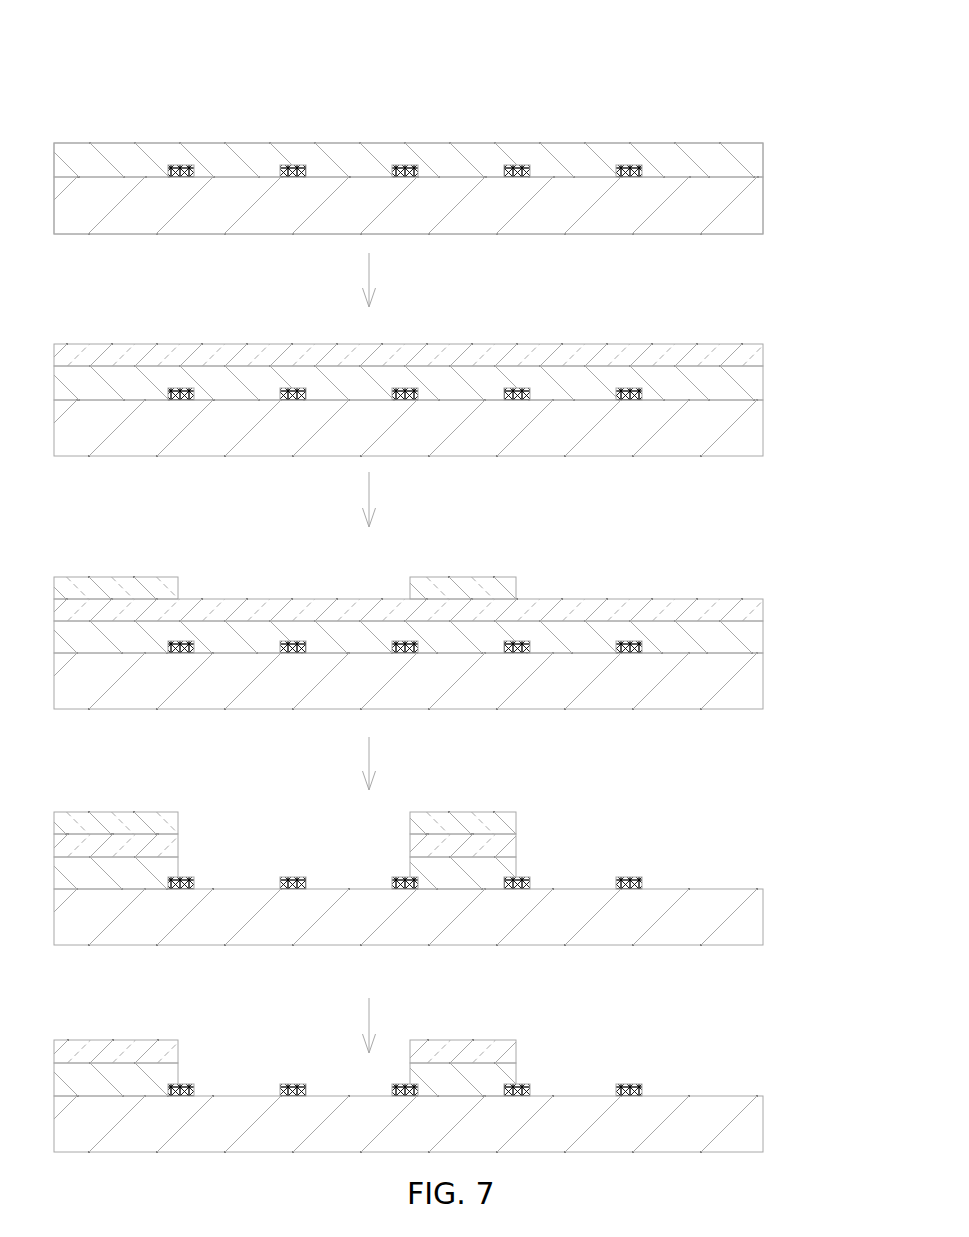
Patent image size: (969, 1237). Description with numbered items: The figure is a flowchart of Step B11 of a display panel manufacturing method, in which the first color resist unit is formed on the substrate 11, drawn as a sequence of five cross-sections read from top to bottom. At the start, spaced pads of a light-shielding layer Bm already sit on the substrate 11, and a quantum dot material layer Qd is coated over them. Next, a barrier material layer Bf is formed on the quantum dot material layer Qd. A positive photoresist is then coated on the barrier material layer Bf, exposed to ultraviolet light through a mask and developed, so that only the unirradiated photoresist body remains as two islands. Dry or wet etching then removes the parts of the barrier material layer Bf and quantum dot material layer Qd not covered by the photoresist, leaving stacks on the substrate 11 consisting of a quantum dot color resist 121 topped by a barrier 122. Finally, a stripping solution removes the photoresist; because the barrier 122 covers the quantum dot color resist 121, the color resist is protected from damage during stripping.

The substrate 11 is at (747, 208).
The light-shielding layer Bm is at (293, 166).
The quantum dot material layer Qd is at (447, 160).
The barrier material layer Bf is at (425, 358).
The barrier 122 is at (517, 832).
The quantum dot color resist 121 is at (503, 870).
The Step B11 is at (780, 114).